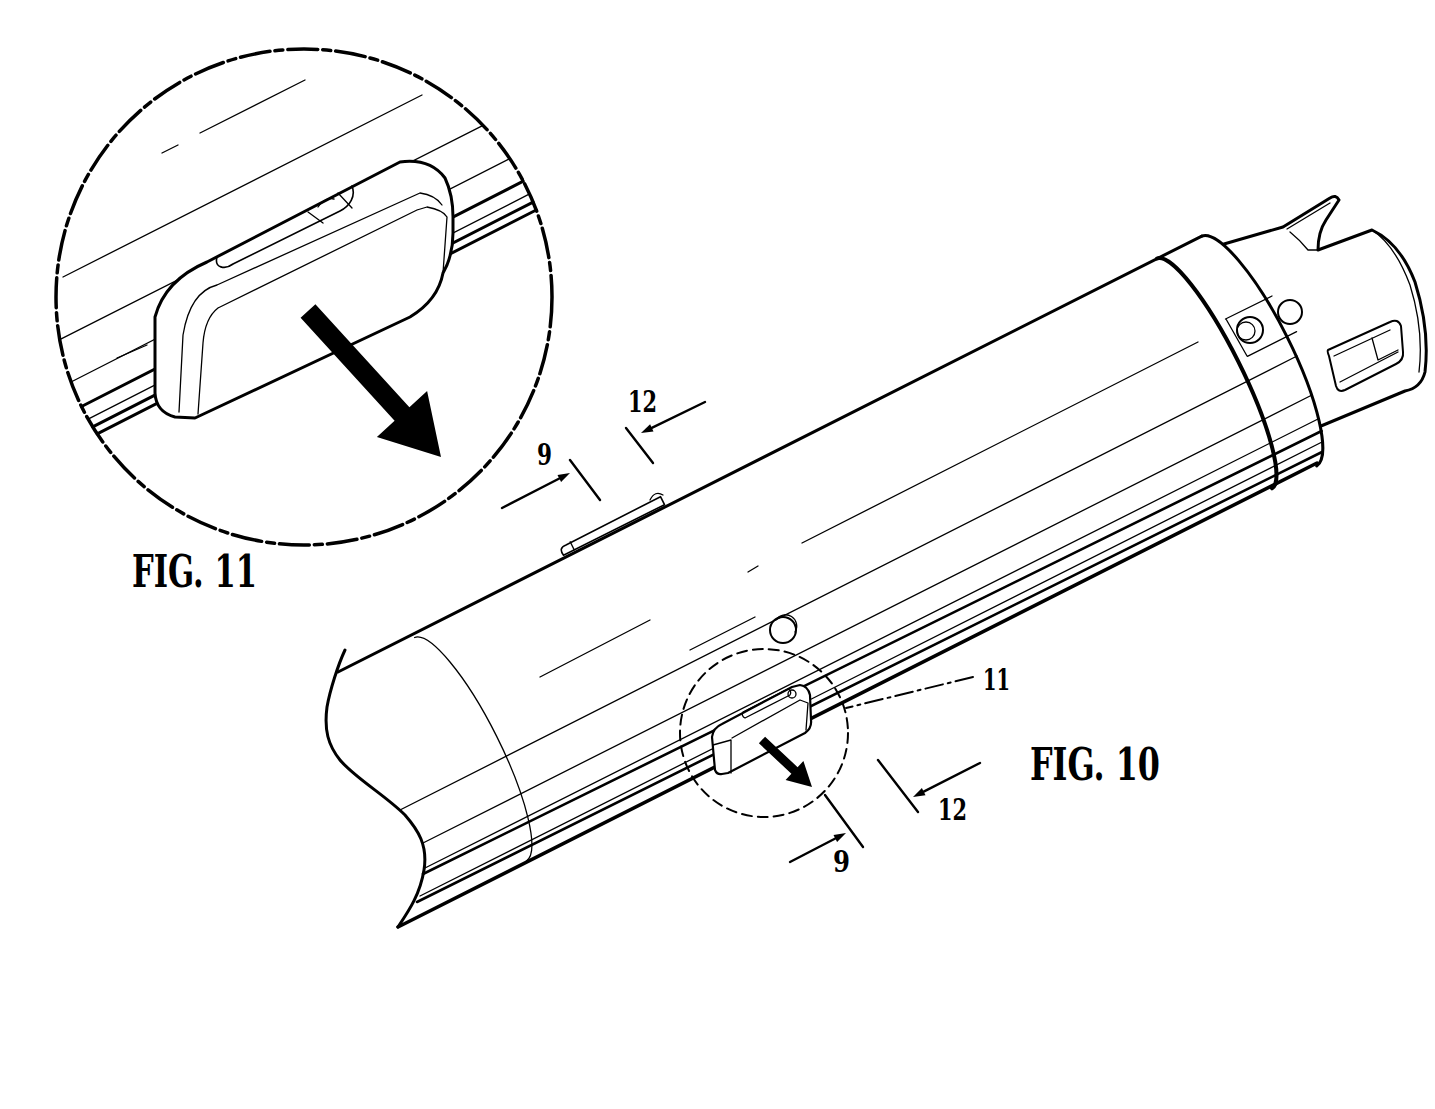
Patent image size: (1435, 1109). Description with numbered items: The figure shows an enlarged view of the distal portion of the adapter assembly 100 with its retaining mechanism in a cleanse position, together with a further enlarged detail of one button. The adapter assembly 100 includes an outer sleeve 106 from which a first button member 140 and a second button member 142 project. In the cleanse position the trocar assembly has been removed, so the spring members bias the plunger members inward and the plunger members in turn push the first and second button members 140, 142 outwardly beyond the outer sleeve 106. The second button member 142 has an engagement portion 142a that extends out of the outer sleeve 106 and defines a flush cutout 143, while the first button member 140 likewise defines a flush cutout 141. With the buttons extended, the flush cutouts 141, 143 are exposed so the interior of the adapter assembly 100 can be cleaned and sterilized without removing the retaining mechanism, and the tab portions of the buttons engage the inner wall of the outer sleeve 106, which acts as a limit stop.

In FIG. 10, the adapter assembly 100 is at (876, 556).
In FIG. 10, the outer sleeve 106 is at (780, 464).
In FIG. 11, the outer sleeve 106 is at (492, 203).
In FIG. 10, the first button member 140 is at (602, 499).
In FIG. 10, the flush cutout 141 is at (650, 493).
In FIG. 10, the second button member 142 is at (798, 765).
In FIG. 11, the second button member 142 is at (284, 346).
In FIG. 11, the engagement portion 142a is at (265, 373).
In FIG. 10, the flush cutout 143 is at (766, 706).
In FIG. 11, the flush cutout 143 is at (278, 237).